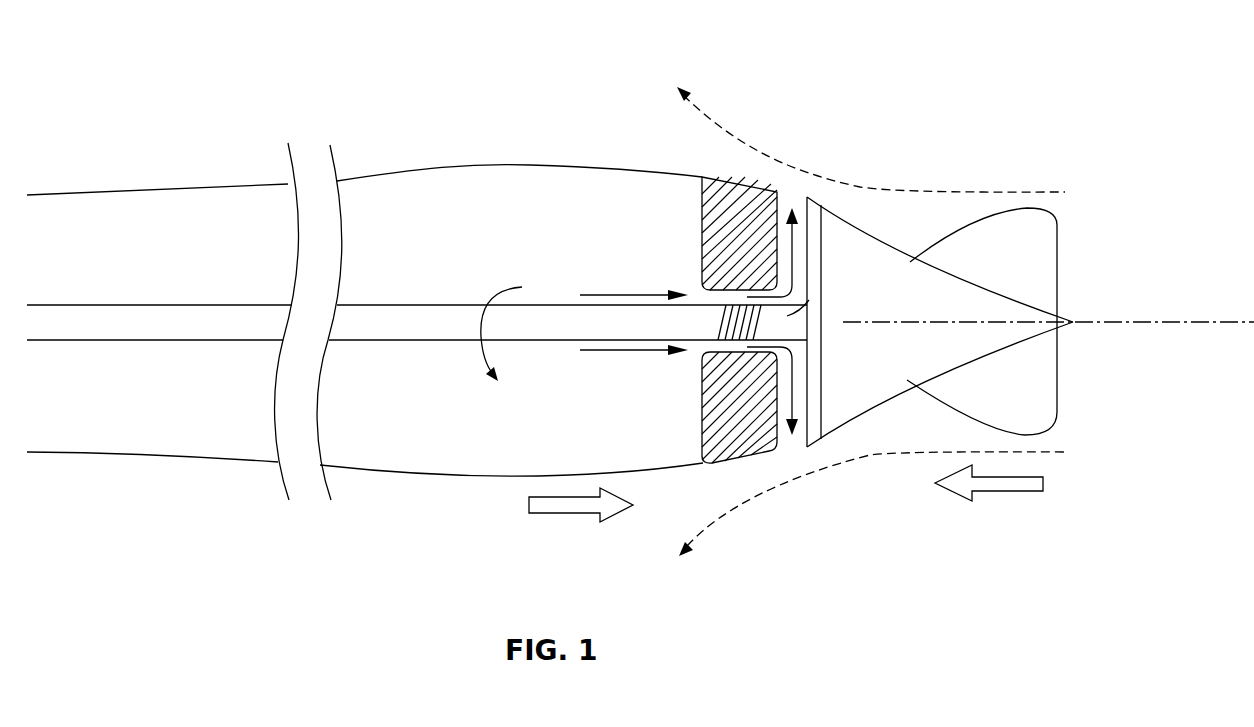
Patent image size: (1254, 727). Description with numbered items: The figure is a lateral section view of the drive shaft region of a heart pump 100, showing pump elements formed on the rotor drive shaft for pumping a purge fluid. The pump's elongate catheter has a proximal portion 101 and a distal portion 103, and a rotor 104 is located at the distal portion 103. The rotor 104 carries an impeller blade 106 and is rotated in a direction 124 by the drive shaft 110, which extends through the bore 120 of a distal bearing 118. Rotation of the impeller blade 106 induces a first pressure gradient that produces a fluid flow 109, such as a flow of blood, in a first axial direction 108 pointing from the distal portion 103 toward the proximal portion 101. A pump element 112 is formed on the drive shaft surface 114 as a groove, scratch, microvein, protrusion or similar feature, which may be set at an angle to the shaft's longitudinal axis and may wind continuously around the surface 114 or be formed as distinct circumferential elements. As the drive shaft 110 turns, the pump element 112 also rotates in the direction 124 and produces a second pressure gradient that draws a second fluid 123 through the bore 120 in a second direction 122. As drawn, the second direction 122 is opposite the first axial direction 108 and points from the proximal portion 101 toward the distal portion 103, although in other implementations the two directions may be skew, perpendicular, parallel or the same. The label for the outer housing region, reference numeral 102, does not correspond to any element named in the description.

The heart pump 100 is at (243, 91).
The proximal portion 101 is at (173, 203).
The nacelle duct 102 is at (455, 182).
The distal portion 103 is at (1047, 190).
The rotor 104 is at (972, 228).
The impeller blade 106 is at (1052, 250).
The first axial direction 108 is at (1013, 483).
The fluid flow 109 is at (918, 452).
The drive shaft 110 is at (797, 323).
The pump element 112 is at (733, 340).
The drive shaft surface 114 is at (811, 300).
The distal bearing 118 is at (758, 418).
The bore 120 is at (703, 352).
The second direction 122 is at (570, 513).
The second fluid 123 is at (603, 293).
The direction 124 is at (480, 350).